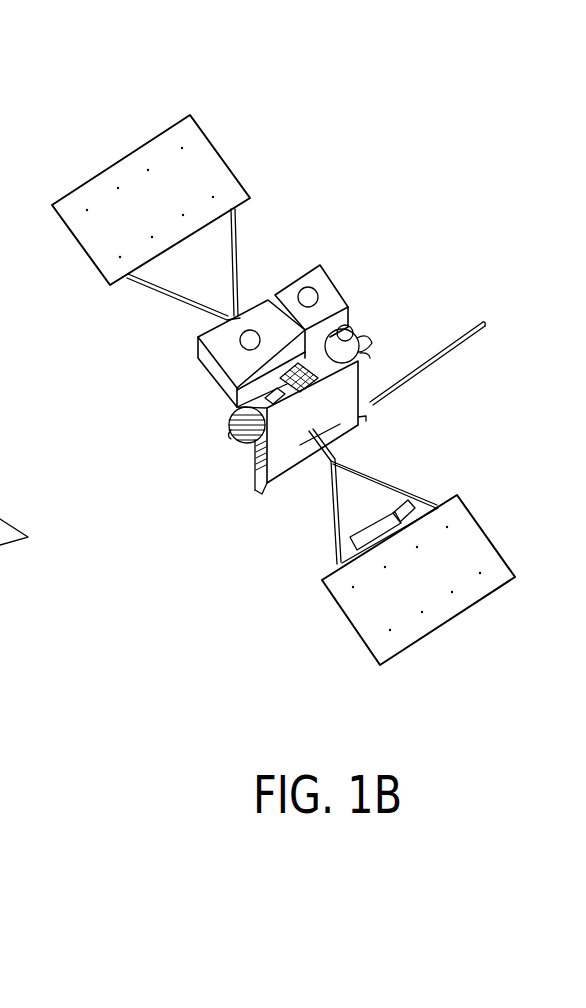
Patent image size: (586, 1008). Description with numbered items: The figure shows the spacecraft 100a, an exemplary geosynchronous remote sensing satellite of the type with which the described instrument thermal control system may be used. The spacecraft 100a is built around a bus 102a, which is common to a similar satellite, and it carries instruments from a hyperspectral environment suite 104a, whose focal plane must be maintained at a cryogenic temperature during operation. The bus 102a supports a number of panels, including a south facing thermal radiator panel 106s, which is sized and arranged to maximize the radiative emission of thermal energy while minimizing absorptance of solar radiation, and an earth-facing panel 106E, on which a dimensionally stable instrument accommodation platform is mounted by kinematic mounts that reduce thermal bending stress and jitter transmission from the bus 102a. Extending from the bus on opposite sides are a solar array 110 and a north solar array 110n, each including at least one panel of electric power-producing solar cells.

The spacecraft 100a is at (357, 44).
The bus 102a is at (408, 314).
The hyperspectral environment suite instruments 104a is at (289, 262).
The earth-facing panel 106E is at (200, 451).
The south facing thermal radiator panel 106s is at (337, 423).
The solar array 110 is at (462, 615).
The north solar array 110n is at (117, 160).